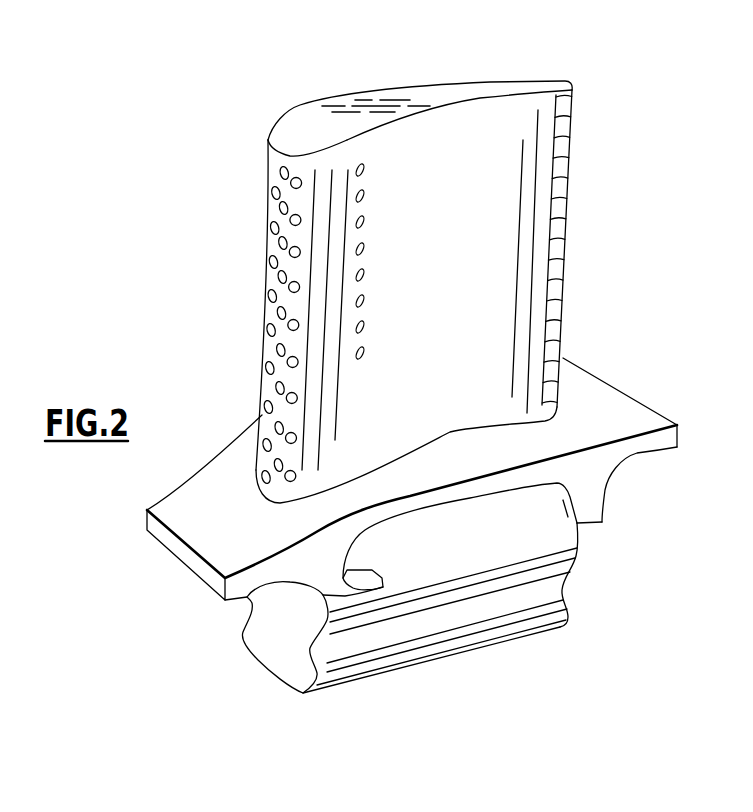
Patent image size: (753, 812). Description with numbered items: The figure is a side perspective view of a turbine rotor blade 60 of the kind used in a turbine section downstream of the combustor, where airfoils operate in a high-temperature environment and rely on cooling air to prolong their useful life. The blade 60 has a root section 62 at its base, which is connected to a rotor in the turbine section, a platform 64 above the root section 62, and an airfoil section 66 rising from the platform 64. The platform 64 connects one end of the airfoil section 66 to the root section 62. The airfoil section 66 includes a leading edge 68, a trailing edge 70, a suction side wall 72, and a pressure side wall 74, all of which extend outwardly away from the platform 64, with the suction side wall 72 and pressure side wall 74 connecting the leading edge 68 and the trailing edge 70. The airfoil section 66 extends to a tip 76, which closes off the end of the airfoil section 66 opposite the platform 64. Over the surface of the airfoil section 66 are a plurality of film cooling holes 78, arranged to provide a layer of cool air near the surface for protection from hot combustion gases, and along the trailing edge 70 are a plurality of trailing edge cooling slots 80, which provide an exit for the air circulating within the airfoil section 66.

The turbine rotor blade 60 is at (172, 196).
The root section 62 is at (270, 648).
The platform 64 is at (190, 519).
The airfoil section 66 is at (493, 223).
The leading edge 68 is at (268, 277).
The trailing edge 70 is at (570, 155).
The suction side wall 72 is at (363, 88).
The pressure side wall 74 is at (513, 118).
The tip 76 is at (305, 128).
The film cooling holes 78 is at (280, 173).
The trailing edge cooling slots 80 is at (557, 233).